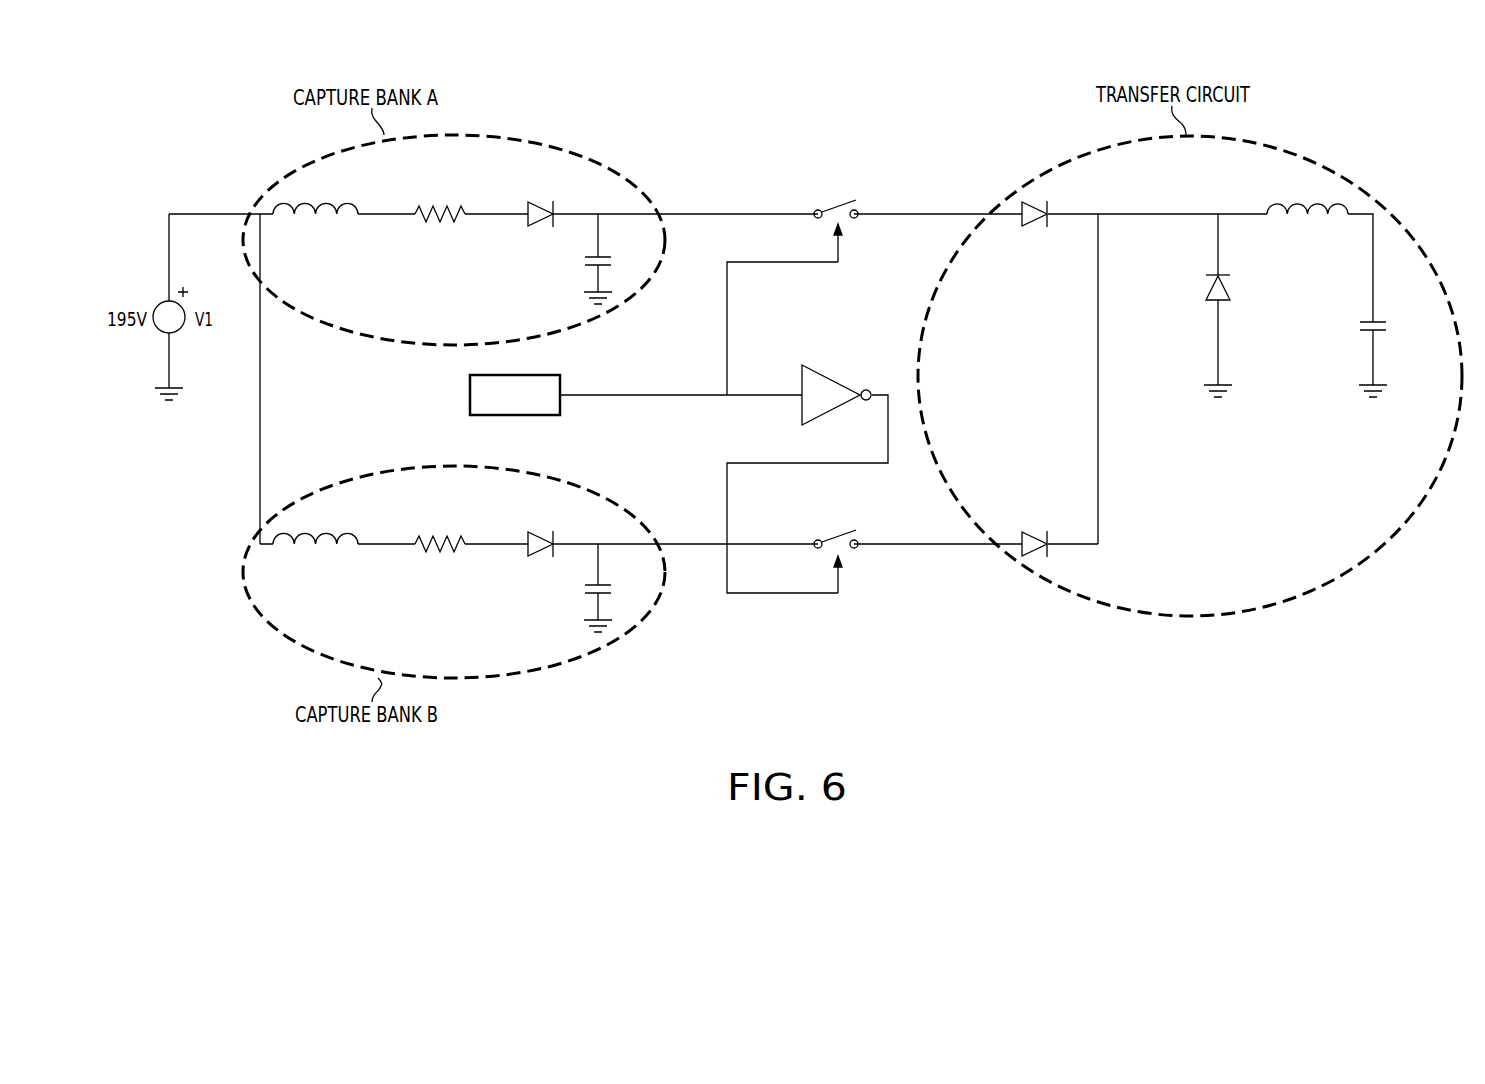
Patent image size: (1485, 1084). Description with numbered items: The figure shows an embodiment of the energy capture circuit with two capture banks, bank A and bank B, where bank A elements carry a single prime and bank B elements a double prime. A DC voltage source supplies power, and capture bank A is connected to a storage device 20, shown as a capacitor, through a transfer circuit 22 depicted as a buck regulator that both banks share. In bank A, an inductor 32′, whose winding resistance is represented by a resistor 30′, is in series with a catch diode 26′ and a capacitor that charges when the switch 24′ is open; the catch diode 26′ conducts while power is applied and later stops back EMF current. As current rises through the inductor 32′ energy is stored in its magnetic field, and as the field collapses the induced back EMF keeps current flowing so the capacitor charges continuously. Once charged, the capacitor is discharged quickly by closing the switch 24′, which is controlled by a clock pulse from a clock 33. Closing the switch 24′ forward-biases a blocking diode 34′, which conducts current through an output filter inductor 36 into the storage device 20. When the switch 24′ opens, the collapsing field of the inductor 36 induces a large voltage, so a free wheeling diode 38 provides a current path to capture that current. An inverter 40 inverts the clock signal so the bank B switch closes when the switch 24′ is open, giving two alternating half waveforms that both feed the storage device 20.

The transfer circuit 22 is at (1312, 160).
The storage device 20 is at (1360, 333).
The switch 24′ is at (836, 208).
The catch diode 26′ is at (541, 227).
The resistor 30′ is at (440, 222).
The inductor 32′ is at (337, 222).
The clock 33 is at (470, 395).
The blocking diode 34′ is at (1031, 226).
The output filter inductor 36 is at (1315, 222).
The free wheeling diode 38 is at (1210, 296).
The inverter 40 is at (833, 376).